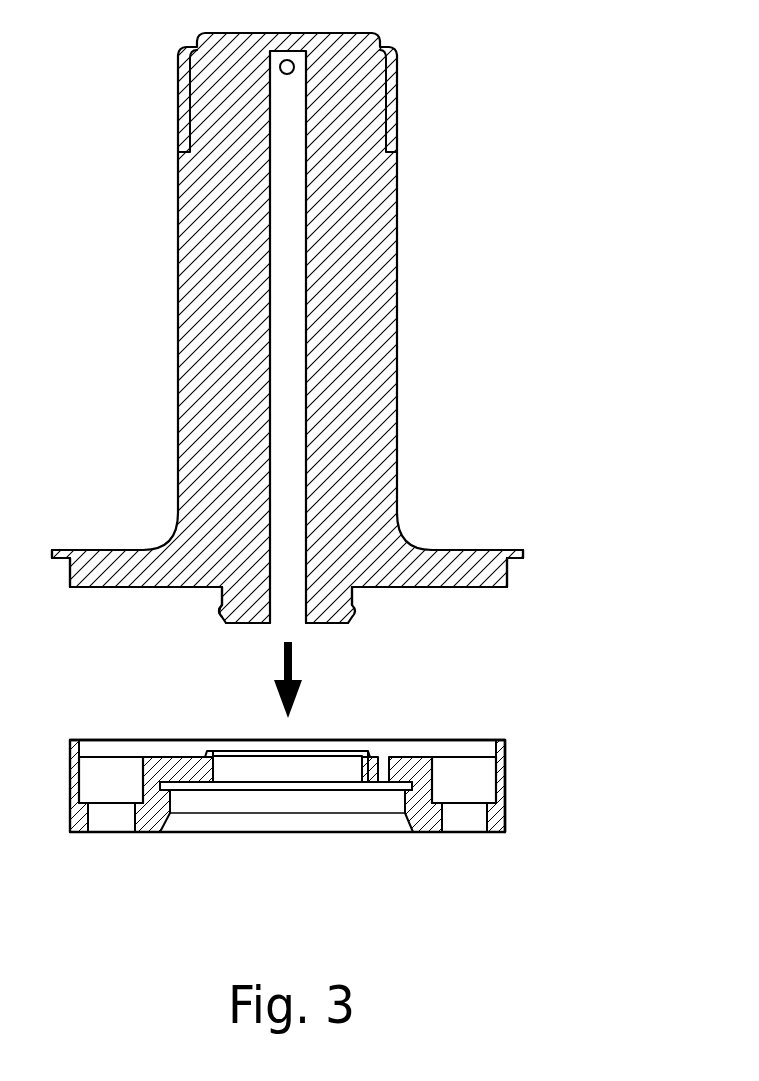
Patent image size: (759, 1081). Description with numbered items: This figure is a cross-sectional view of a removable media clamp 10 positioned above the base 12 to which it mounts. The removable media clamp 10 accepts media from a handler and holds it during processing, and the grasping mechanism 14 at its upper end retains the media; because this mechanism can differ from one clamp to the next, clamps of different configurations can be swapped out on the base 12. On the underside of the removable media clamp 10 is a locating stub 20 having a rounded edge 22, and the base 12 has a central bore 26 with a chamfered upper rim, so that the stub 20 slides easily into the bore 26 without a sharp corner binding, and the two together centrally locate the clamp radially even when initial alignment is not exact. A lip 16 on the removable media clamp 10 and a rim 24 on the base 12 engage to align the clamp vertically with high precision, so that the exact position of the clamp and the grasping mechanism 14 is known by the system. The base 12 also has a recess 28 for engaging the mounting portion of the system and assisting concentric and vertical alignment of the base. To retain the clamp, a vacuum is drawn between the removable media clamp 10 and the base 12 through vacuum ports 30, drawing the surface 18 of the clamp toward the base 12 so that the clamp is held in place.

The removable media clamp 10 is at (476, 161).
The base 12 is at (570, 796).
The grasping mechanism 14 is at (178, 76).
The lip 16 is at (523, 557).
The surface 18 is at (458, 587).
The locating stub 20 is at (326, 623).
The rounded edge 22 is at (222, 614).
The rim 24 is at (500, 740).
The central bore 26 is at (213, 770).
The recess 28 is at (383, 832).
The vacuum ports 30 is at (105, 817).